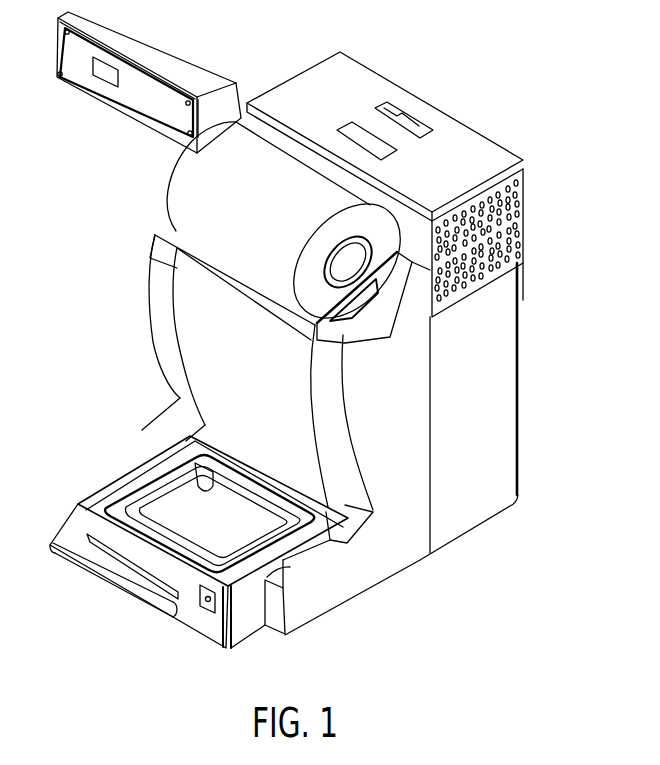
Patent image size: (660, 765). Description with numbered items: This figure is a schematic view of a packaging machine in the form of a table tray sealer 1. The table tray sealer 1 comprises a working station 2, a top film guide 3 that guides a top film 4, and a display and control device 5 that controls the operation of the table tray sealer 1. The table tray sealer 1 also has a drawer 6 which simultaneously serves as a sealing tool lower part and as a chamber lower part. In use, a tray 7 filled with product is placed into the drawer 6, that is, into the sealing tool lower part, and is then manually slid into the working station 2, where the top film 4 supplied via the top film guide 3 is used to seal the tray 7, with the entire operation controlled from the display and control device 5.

The table tray sealer 1 is at (562, 66).
The working station 2 is at (490, 455).
The top film guide 3 is at (422, 375).
The top film 4 is at (287, 390).
The display and control device 5 is at (152, 112).
The drawer 6 is at (245, 622).
The tray 7 is at (173, 503).